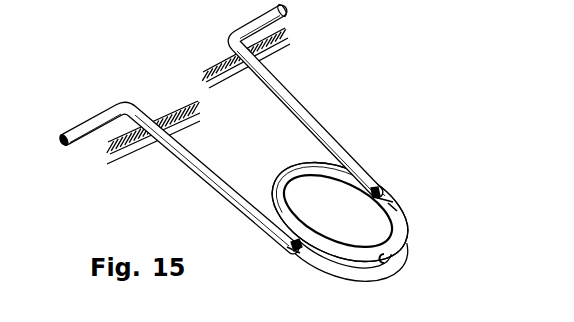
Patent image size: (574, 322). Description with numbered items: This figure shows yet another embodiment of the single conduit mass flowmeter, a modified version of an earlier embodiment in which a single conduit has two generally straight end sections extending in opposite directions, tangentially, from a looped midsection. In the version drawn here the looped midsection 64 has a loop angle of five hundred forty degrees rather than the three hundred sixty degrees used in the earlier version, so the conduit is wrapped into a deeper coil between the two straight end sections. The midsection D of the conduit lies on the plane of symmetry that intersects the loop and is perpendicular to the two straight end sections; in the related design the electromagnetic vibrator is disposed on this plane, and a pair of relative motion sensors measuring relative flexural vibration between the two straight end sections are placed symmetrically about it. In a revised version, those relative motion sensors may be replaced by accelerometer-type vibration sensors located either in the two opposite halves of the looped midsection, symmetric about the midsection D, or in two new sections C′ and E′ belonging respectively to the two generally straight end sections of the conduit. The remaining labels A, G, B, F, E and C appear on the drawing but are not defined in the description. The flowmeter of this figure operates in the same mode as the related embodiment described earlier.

The first bent rod A is at (158, 139).
The second bent rod G is at (263, 62).
The looped midsection 64 is at (302, 167).
The midsection of the conduit D is at (284, 172).
The lower ring portion B is at (383, 277).
The loop fastener F is at (384, 257).
The clamp E is at (290, 247).
The new section of generally straight end section E′ is at (390, 183).
The clamp screw C is at (393, 200).
The new section of generally straight end section C′ is at (293, 253).